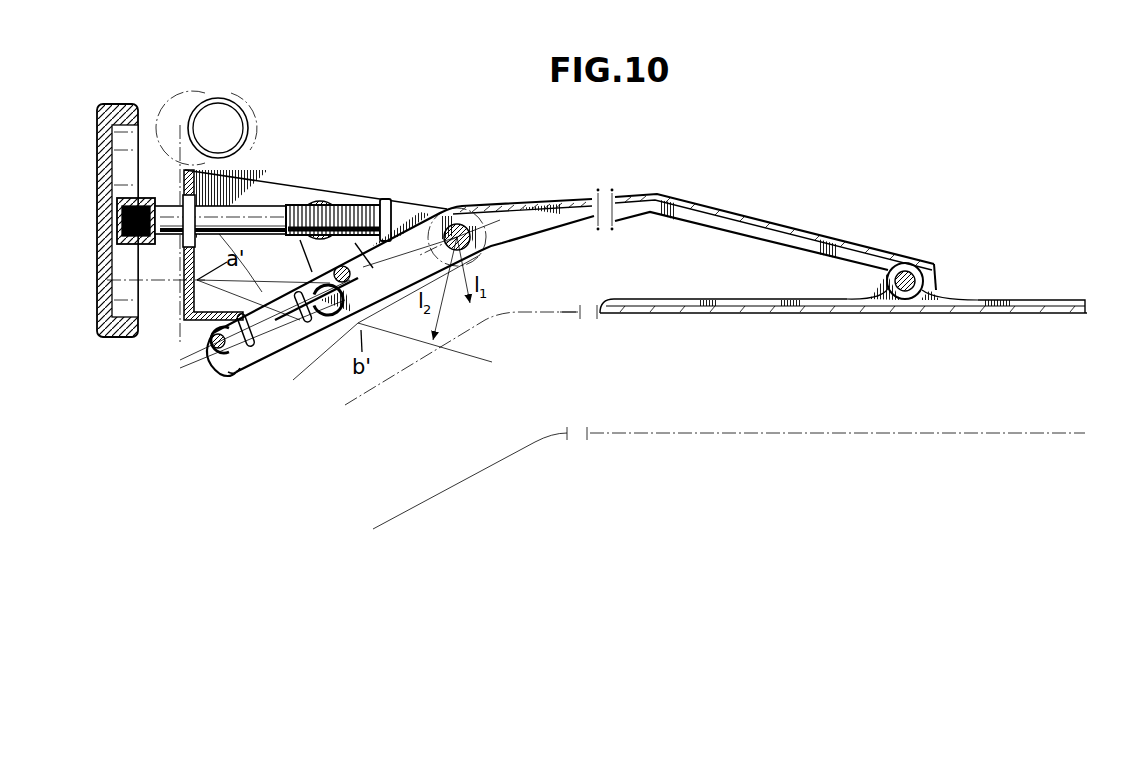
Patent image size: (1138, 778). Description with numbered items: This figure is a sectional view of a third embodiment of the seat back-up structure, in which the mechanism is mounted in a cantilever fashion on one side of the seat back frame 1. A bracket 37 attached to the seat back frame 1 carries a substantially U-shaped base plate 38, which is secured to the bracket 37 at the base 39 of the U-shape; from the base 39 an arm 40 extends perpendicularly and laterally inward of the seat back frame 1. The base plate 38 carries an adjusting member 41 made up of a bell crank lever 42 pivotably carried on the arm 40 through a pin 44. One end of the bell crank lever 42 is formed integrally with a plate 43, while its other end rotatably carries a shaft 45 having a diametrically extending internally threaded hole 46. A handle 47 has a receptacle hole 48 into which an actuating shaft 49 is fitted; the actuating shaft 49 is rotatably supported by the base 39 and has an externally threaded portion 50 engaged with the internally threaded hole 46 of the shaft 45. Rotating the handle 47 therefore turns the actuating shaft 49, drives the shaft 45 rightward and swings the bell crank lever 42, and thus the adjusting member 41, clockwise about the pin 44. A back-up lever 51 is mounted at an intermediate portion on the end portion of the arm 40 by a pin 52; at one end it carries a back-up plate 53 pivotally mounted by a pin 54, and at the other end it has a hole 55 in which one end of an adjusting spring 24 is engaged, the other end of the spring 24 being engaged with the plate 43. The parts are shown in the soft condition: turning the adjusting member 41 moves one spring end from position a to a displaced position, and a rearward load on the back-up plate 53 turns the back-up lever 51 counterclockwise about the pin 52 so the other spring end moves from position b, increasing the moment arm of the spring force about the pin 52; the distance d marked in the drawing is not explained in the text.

The seat back frame 1 is at (262, 113).
The adjusting spring 24 is at (246, 314).
The bracket 37 is at (190, 106).
The base plate 38 is at (268, 177).
The base 39 is at (183, 318).
The arm 40 is at (412, 210).
The adjusting member 41 is at (233, 374).
The bell crank lever 42 is at (257, 352).
The plate 43 is at (218, 358).
The pin 44 is at (332, 275).
The shaft 45 is at (335, 203).
The internally threaded hole 46 is at (309, 202).
The handle 47 is at (105, 133).
The receptacle hole 48 is at (112, 232).
The actuating shaft 49 is at (186, 256).
The externally threaded portion 50 is at (362, 205).
The back-up lever 51 is at (543, 198).
The pin 52 is at (487, 255).
The back-up plate 53 is at (795, 314).
The pin 54 is at (934, 272).
The hole 55 is at (357, 328).
The position a is at (205, 347).
The position b is at (337, 320).
The distance d is at (387, 320).